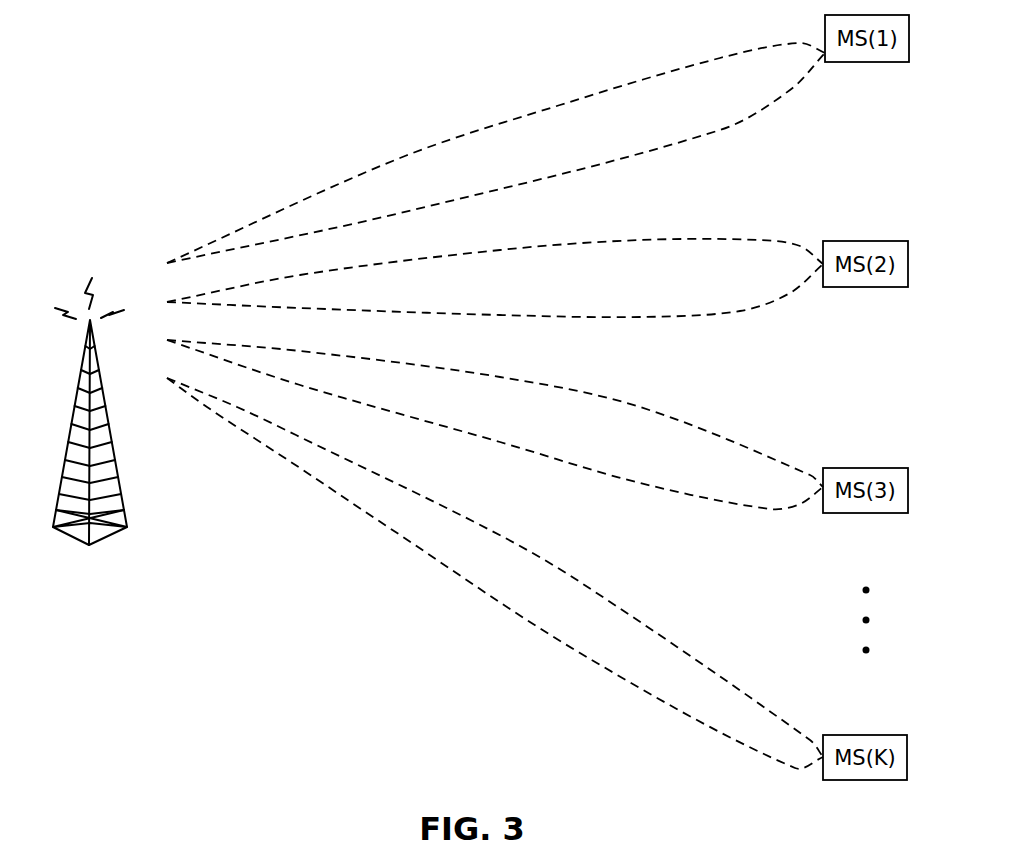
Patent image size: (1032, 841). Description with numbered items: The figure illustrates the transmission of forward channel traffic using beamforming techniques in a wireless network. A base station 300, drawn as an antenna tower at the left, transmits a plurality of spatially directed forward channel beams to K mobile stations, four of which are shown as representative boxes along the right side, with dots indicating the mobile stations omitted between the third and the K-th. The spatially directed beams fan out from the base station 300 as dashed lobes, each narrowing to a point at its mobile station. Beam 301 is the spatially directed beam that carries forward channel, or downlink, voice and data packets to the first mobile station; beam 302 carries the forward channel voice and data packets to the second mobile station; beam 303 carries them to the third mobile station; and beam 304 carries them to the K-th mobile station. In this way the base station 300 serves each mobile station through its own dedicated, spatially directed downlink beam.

The base station 300 is at (89, 545).
The beam 301 is at (388, 164).
The beam 302 is at (689, 240).
The beam 303 is at (673, 420).
The beam 304 is at (600, 591).